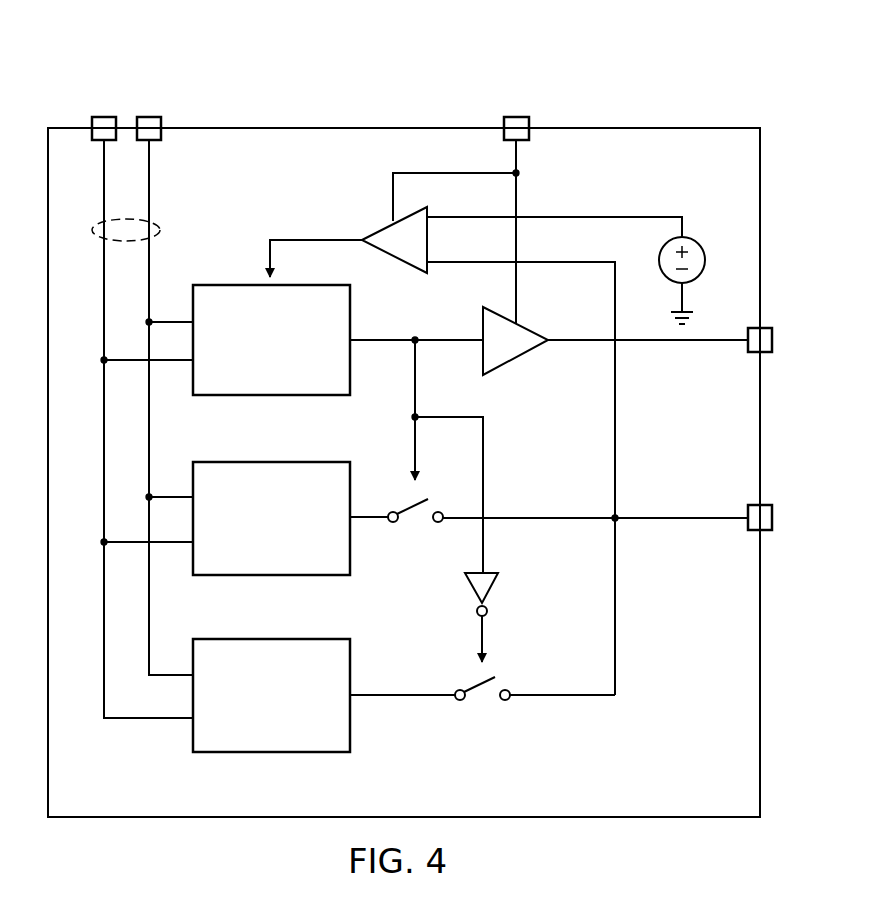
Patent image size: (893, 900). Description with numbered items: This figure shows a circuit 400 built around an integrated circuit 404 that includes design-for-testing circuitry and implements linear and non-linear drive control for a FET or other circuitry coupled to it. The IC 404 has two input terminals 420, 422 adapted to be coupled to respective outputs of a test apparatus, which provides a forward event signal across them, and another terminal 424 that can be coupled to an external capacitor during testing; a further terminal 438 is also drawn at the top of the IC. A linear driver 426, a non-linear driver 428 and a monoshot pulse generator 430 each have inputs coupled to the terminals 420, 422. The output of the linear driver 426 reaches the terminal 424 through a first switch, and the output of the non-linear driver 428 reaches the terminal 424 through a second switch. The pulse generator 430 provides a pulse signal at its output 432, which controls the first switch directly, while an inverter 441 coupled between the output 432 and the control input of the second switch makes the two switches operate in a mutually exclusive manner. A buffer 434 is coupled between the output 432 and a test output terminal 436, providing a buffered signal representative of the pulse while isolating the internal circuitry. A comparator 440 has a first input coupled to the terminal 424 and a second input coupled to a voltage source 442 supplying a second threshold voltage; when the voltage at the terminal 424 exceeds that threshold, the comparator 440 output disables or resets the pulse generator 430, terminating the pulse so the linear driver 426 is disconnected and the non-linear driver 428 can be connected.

The circuit 400 is at (262, 78).
The integrated circuit 404 is at (482, 800).
The input terminal 420 is at (100, 117).
The input terminal 422 is at (150, 117).
The terminal 424 is at (754, 531).
The linear driver 426 is at (270, 576).
The non-linear driver 428 is at (270, 753).
The monoshot pulse generator 430 is at (264, 396).
The output 432 is at (355, 344).
The buffer 434 is at (527, 356).
The test output terminal 436 is at (754, 353).
The supply pad 438 is at (522, 117).
The comparator 440 is at (386, 224).
The inverter 441 is at (492, 596).
The voltage source 442 is at (700, 247).